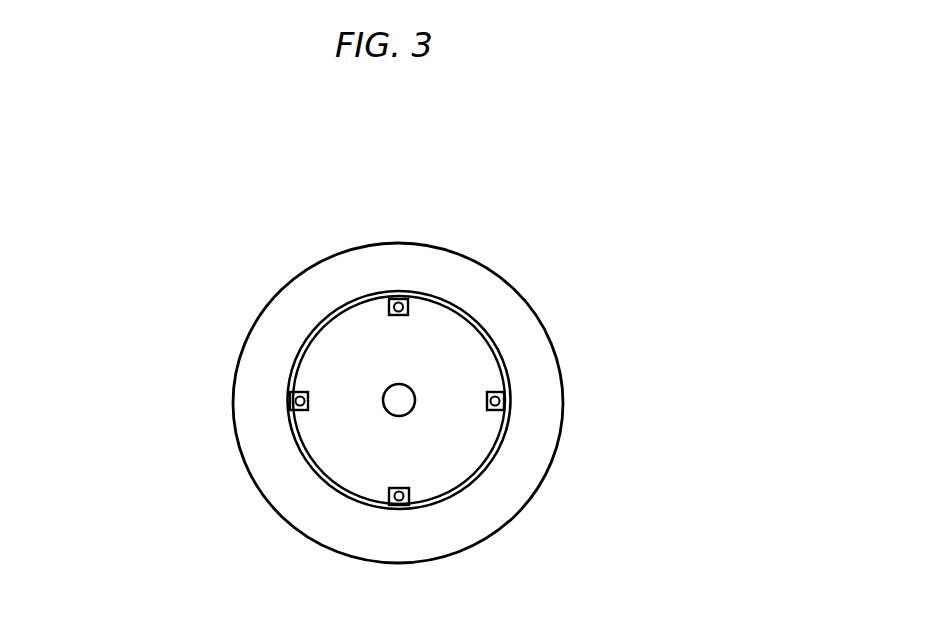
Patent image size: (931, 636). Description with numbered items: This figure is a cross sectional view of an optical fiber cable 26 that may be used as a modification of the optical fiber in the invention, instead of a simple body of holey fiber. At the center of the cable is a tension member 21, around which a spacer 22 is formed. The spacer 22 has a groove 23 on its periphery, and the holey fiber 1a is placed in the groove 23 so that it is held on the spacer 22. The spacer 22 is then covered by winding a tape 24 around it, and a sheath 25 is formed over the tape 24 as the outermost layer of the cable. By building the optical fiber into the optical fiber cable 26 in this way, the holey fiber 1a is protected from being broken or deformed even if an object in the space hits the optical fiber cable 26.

The holey fiber 1a is at (400, 293).
The tension member 21 is at (395, 384).
The spacer 22 is at (320, 355).
The groove 23 is at (293, 384).
The tape 24 is at (307, 453).
The sheath 25 is at (520, 307).
The optical fiber cable 26 is at (449, 363).